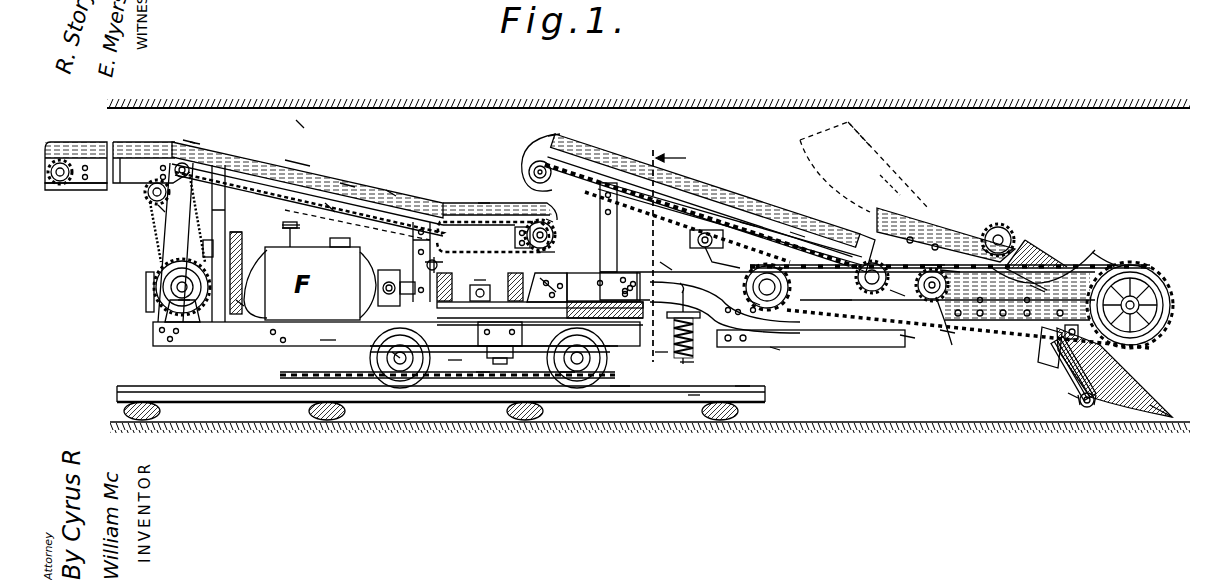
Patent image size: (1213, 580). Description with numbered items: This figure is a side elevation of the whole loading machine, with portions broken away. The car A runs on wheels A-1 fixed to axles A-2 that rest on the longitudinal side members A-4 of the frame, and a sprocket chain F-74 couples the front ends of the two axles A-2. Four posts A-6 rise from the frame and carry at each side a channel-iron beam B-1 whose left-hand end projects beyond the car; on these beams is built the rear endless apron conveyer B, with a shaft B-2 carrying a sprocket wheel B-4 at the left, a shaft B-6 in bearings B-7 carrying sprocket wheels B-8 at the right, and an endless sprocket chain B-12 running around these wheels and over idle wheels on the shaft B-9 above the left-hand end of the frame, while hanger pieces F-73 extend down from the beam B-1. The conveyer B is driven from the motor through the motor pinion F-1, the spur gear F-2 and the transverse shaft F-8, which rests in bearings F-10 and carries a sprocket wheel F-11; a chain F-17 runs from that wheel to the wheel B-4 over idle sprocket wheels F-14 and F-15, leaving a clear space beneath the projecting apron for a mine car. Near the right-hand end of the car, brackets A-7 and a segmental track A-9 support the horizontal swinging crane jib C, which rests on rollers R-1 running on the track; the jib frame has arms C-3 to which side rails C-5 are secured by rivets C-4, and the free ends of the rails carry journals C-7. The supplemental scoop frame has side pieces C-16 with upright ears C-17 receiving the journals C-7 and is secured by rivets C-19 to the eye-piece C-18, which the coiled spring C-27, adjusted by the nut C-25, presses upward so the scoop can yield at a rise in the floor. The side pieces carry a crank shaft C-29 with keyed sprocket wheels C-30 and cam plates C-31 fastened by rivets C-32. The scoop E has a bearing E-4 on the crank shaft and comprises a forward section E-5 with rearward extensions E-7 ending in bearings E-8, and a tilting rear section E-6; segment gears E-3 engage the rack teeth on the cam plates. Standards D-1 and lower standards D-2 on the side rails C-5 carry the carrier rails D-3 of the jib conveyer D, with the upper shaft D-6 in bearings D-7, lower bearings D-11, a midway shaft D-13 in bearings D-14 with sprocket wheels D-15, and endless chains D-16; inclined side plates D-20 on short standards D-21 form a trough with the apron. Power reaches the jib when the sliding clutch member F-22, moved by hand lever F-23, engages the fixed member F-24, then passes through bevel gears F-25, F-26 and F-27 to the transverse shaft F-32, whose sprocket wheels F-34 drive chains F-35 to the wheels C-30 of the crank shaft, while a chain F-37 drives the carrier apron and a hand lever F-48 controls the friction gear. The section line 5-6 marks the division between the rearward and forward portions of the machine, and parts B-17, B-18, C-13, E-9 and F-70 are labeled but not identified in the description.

The car A is at (292, 364).
The wheels A-1 is at (577, 372).
The axles A-2 is at (570, 372).
The longitudinal side members A-4 is at (328, 342).
The posts A-6 is at (422, 225).
The bracket A-7 is at (497, 352).
The segmental track A-9 is at (612, 348).
The rear endless apron conveyer B is at (310, 163).
The plate or beam B-1 is at (282, 168).
The shaft B-2 is at (55, 142).
The sprocket wheel B-4 is at (50, 190).
The transverse shaft B-6 is at (557, 235).
The bearings B-7 is at (553, 250).
The sprocket wheel B-8 is at (548, 221).
The horizontal shaft B-9 is at (150, 200).
The endless sprocket chain B-12 is at (498, 250).
The conveyor rail plate B-17 is at (390, 198).
The conveyor guide B-18 is at (300, 125).
The horizontal swinging crane jib C is at (816, 364).
The arms C-3 is at (600, 348).
The bolts or rivets C-4 is at (552, 290).
The frame side rail C-5 is at (660, 354).
The wrist or journal C-7 is at (947, 332).
The drive sprocket C-13 is at (732, 331).
The side pieces C-16 is at (907, 336).
The upright ears C-17 is at (930, 301).
The eye-piece C-18 is at (697, 336).
The bolts or rivets C-19 is at (740, 388).
The nut C-25 is at (694, 397).
The expanding coiled spring C-27 is at (687, 364).
The crank shaft C-29 is at (1074, 405).
The sprocket wheel C-30 is at (1125, 264).
The cam plate C-31 is at (930, 262).
The bolts or rivets C-32 is at (1037, 287).
The endless apron conveyer D is at (705, 163).
The upright standards D-1 is at (618, 250).
The standard D-2 is at (846, 302).
The carrier frame rail D-3 is at (748, 225).
The transverse horizontal shaft D-6 is at (556, 148).
The bearings D-7 is at (535, 158).
The bearings D-11 is at (898, 292).
The transverse shaft D-13 is at (710, 235).
The bearings D-14 is at (712, 240).
The sprocket wheel D-15 is at (720, 255).
The endless sprocket chain D-16 is at (798, 243).
The inclined stationary side plates D-20 is at (797, 235).
The short standards D-21 is at (862, 200).
The scoop or shovel E is at (1153, 359).
The segment gears E-3 is at (1000, 236).
The bearing E-4 is at (1092, 402).
The forward section E-5 is at (1120, 385).
The rear section E-6 is at (1052, 325).
The rearward extension E-7 is at (1045, 360).
The bearing E-8 is at (894, 184).
The support foot E-9 is at (1067, 363).
The motor pinion F-1 is at (241, 302).
The spur gear wheel F-2 is at (240, 247).
The transverse shaft F-8 is at (185, 314).
The bearings F-10 is at (166, 301).
The sprocket wheel F-11 is at (156, 280).
The idle sprocket wheel F-14 is at (160, 208).
The idle sprocket wheel F-15 is at (193, 142).
The endless sprocket chain F-17 is at (166, 250).
The sliding clutch member F-22 is at (398, 360).
The hand lever F-23 is at (382, 272).
The fixed clutch member F-24 is at (455, 362).
The bevel gear wheel F-25 is at (452, 288).
The horizontal bevel gear wheel F-26 is at (466, 304).
The bevel gear wheel F-27 is at (512, 288).
The horizontal transverse shaft F-32 is at (755, 302).
The sprocket wheel F-34 is at (775, 349).
The sprocket chain F-35 is at (950, 268).
The endless sprocket chain F-37 is at (665, 262).
The hand lever F-48 is at (672, 365).
The bracket F-70 is at (285, 228).
The hanger pieces F-73 is at (330, 203).
The sprocket chain F-74 is at (483, 374).
The roller R-1 is at (618, 404).
The section line 5-6 is at (651, 254).